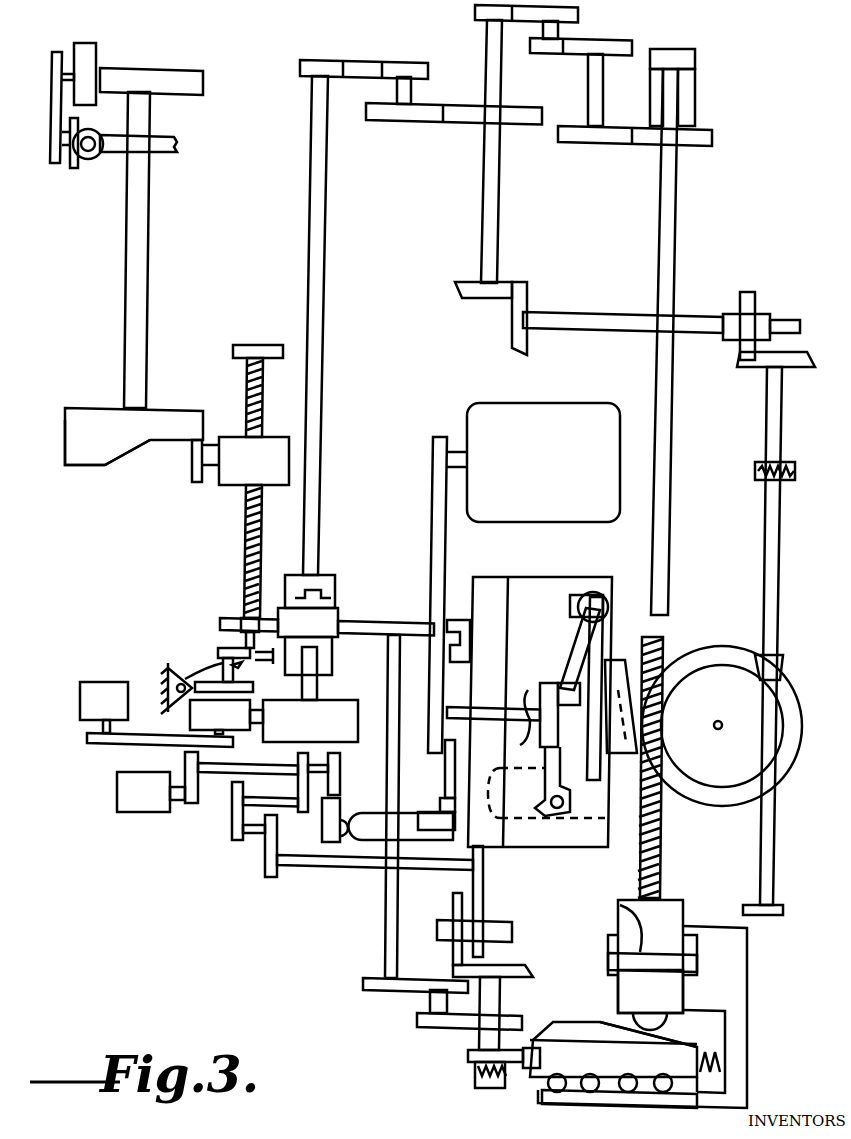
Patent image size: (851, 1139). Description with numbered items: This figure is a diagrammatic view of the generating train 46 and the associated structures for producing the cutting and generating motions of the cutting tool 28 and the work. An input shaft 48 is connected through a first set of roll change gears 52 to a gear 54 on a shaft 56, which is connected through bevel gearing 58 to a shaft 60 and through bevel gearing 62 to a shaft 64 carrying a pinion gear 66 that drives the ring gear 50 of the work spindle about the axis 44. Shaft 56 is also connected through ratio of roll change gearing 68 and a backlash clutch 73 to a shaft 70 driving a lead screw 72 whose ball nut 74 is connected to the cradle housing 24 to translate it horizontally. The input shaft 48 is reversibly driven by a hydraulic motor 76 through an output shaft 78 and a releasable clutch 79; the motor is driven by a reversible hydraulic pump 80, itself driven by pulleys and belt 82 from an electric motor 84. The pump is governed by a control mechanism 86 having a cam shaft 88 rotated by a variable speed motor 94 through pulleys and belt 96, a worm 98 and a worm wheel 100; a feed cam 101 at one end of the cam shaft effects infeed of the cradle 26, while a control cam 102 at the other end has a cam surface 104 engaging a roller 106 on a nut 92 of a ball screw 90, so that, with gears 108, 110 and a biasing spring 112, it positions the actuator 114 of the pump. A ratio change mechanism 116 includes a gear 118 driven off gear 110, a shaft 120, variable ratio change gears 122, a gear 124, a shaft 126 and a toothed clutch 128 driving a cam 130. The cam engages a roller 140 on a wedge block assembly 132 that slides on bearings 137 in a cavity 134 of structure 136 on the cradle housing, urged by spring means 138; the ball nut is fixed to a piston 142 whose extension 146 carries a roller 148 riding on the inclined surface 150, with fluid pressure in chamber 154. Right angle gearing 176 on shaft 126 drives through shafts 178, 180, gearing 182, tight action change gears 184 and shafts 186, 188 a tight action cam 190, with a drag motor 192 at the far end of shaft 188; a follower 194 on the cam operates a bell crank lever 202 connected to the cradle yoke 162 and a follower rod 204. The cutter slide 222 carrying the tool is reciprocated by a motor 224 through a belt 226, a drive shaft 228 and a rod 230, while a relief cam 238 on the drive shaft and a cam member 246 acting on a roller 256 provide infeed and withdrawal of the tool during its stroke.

The cradle housing 24 is at (748, 985).
The cradle 26 is at (546, 587).
The cutting tool 28 is at (637, 710).
The axis 44 is at (716, 730).
The generating train 46 is at (750, 212).
The input shaft 48 is at (327, 396).
The ring gear 50 is at (798, 720).
The roll change gears 52 is at (358, 104).
The gear 54 is at (460, 126).
The shaft 56 is at (502, 230).
The bevel gearing 58 is at (500, 300).
The shaft 60 is at (592, 315).
The bevel gearing 62 is at (746, 368).
The shaft 64 is at (783, 568).
The pinion gear 66 is at (785, 665).
The ratio of roll change gearing 68 is at (595, 29).
The shaft 70 is at (676, 263).
The lead screw 72 is at (646, 146).
The backlash clutch 73 is at (670, 54).
The ball nut 74 is at (684, 914).
The reversible hydraulic motor 76 is at (322, 737).
The output shaft 78 is at (320, 699).
The releasable clutch 79 is at (333, 582).
The reversible hydraulic pump 80 is at (235, 727).
The pulleys and belt 82 is at (138, 748).
The electric motor 84 is at (80, 702).
The control mechanism 86 is at (105, 373).
The cam shaft 88 is at (150, 297).
The ball screw 90 is at (246, 387).
The nut 92 is at (270, 474).
The variable speed motor 94 is at (88, 68).
The pulleys and belt 96 is at (52, 106).
The worm 98 is at (90, 160).
The worm wheel 100 is at (180, 146).
The feed cam 101 is at (192, 72).
The control cam 102 is at (62, 456).
The cam surface 104 is at (116, 462).
The roller 106 is at (197, 484).
The gear 108 is at (220, 623).
The gear 110 is at (338, 614).
The biasing spring 112 is at (168, 668).
The actuator 114 is at (212, 648).
The ratio change mechanism 116 is at (395, 1030).
The gear 118 is at (386, 628).
The shaft 120 is at (385, 948).
The variable ratio change gears 122 is at (395, 992).
The gear 124 is at (458, 1028).
The shaft 126 is at (500, 1000).
The clutch 128 is at (473, 1086).
The cam 130 is at (466, 1058).
The wedge block assembly 132 is at (530, 1078).
The cavity 134 is at (712, 1093).
The structure 136 is at (748, 1032).
The bearings 137 is at (588, 1105).
The spring means 138 is at (715, 1060).
The roller 140 is at (547, 1050).
The piston 142 is at (620, 940).
The axial extension 146 is at (622, 1004).
The roller 148 is at (668, 1022).
The inclined surface 150 is at (668, 1050).
The chamber 154 is at (697, 963).
The yoke 162 is at (462, 648).
The right angle gearing 176 is at (450, 957).
The shaft 178 is at (500, 928).
The shaft 180 is at (349, 870).
The gearing 182 is at (484, 897).
The tight action change gears 184 is at (228, 843).
The shaft 186 is at (247, 805).
The shaft 188 is at (270, 770).
The tight action cam 190 is at (338, 770).
The drag motor 192 is at (117, 808).
The follower 194 is at (342, 812).
The bell crank lever 202 is at (440, 800).
The follower rod 204 is at (428, 866).
The cutter slide 222 is at (610, 605).
The motor 224 is at (570, 467).
The belt 226 is at (446, 562).
The drive shaft 228 is at (462, 714).
The rod 230 is at (565, 662).
The relief cam 238 is at (527, 720).
The cam member 246 is at (555, 860).
The roller 256 is at (562, 800).